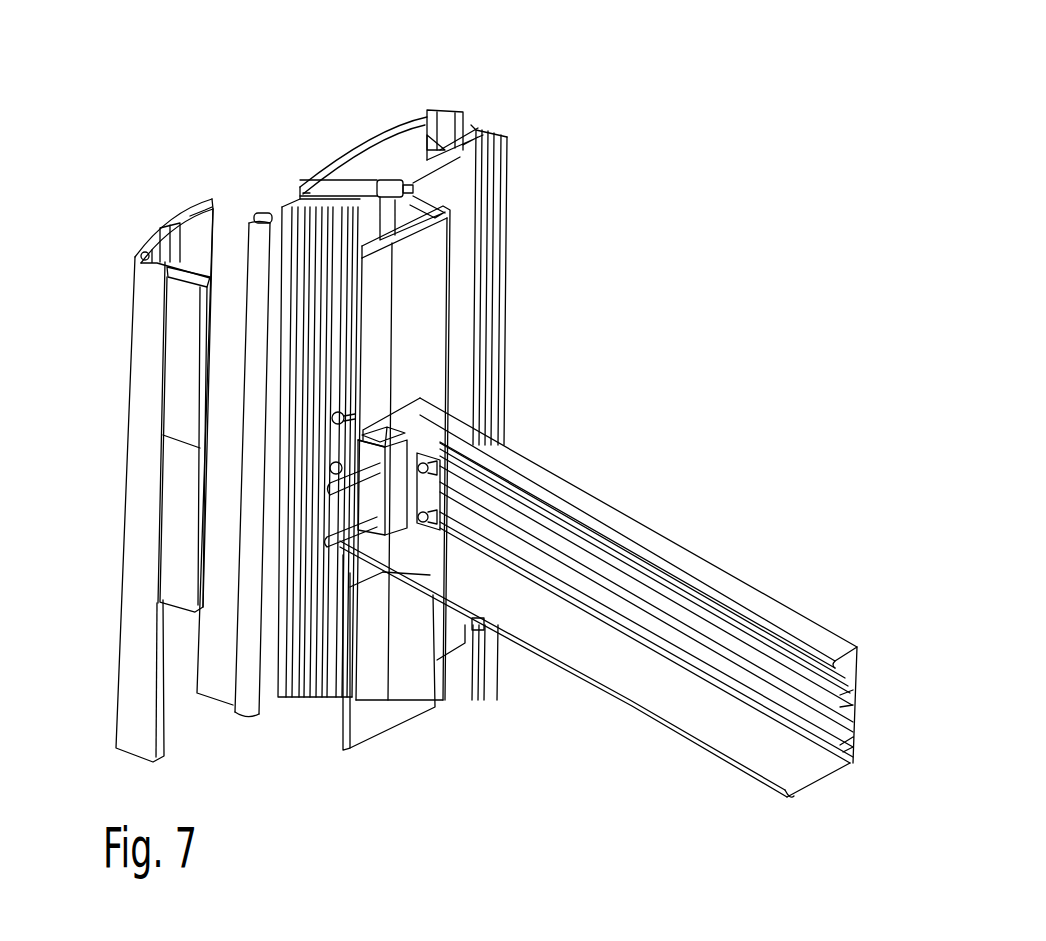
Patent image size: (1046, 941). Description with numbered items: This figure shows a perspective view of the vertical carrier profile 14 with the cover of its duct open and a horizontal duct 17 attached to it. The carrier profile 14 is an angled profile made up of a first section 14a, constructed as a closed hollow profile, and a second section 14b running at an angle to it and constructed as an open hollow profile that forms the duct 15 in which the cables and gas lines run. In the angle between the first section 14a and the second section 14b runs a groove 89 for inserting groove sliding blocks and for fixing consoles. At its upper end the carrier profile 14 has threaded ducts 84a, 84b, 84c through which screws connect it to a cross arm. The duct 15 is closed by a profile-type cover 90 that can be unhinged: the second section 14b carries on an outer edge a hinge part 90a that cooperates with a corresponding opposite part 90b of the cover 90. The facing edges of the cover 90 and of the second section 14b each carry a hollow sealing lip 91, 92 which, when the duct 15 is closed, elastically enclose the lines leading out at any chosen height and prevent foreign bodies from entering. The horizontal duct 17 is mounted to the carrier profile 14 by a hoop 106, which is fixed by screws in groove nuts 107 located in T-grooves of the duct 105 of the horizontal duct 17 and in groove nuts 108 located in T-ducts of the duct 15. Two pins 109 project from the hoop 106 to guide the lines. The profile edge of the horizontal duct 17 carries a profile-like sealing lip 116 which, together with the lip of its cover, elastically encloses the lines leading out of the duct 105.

The carrier profile 14 is at (510, 192).
The first section 14a is at (397, 128).
The second section 14b is at (282, 206).
The duct 15 is at (270, 677).
The horizontal duct 17 is at (627, 683).
The threaded duct 84a is at (308, 196).
The threaded duct 84b is at (433, 205).
The threaded duct 84c is at (430, 125).
The groove 89 is at (386, 182).
The cover 90 is at (190, 208).
The hinge part 90a is at (262, 208).
The opposite part 90b is at (212, 200).
The hollow sealing lip 91 is at (353, 742).
The hollow sealing lip 92 is at (178, 573).
The duct 105 is at (427, 523).
The hoop 106 is at (440, 483).
The groove nut 107 is at (429, 527).
The groove nut 108 is at (340, 408).
The pin 109 is at (350, 613).
The sealing lip 116 is at (720, 760).